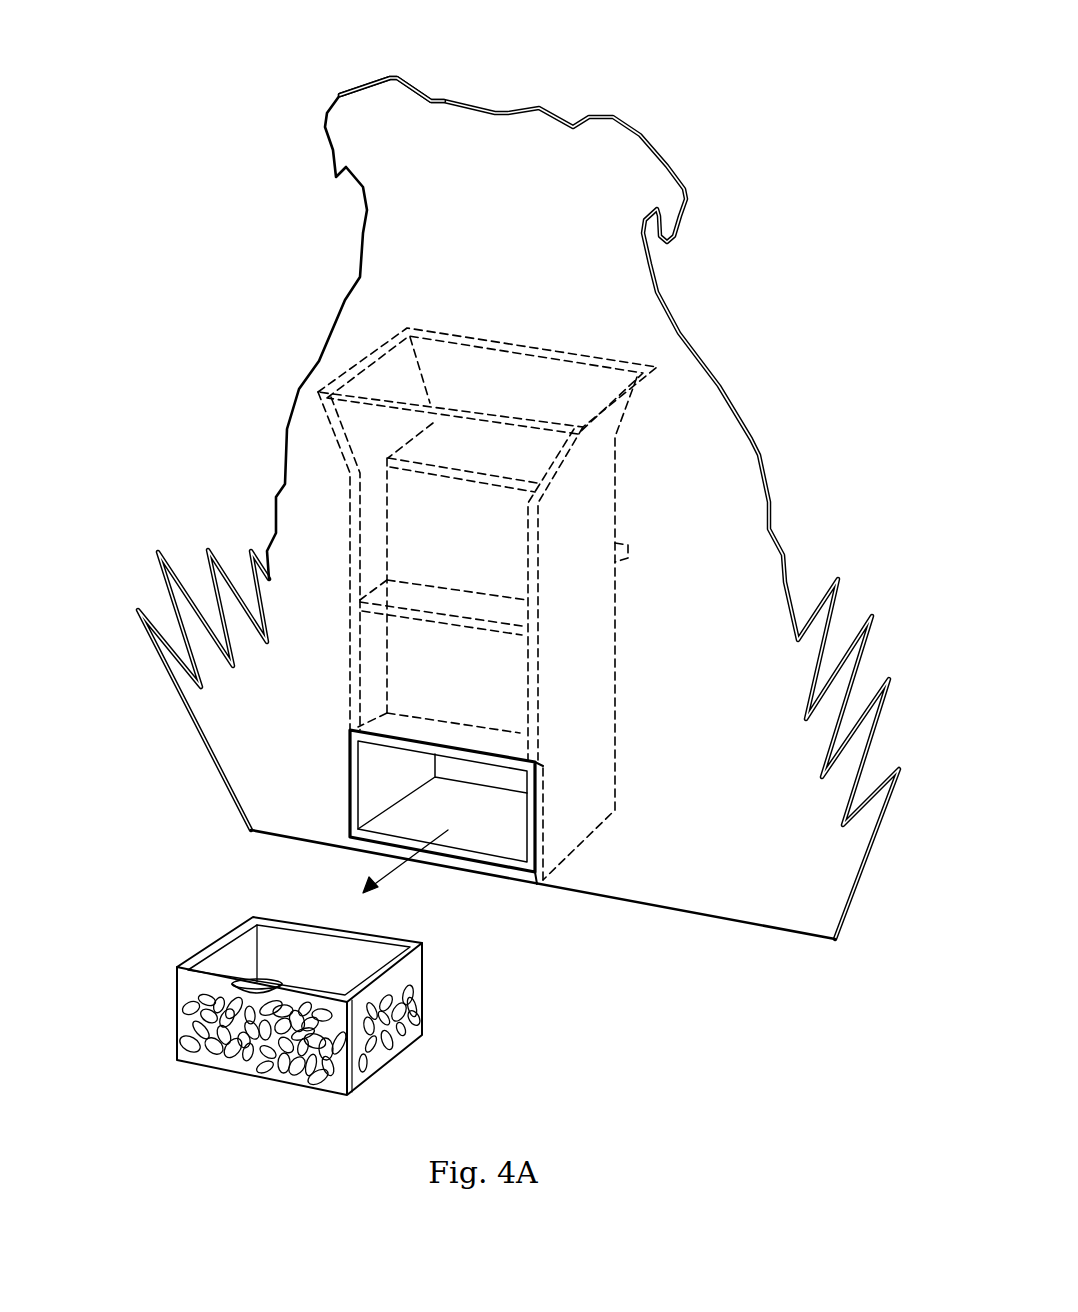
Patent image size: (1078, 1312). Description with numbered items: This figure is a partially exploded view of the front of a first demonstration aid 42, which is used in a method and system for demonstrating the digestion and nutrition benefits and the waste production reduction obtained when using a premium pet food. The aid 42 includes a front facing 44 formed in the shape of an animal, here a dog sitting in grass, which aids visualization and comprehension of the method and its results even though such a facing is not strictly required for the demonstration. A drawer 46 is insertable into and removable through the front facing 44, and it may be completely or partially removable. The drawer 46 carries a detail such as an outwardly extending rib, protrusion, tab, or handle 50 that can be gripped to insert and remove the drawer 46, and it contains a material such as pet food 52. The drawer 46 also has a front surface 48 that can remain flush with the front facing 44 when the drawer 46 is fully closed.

The first demonstration aid 42 is at (686, 80).
The front facing 44 is at (342, 96).
The drawer 46 is at (207, 947).
The front surface 48 is at (213, 994).
The handle 50 is at (233, 987).
The pet food 52 is at (177, 1017).